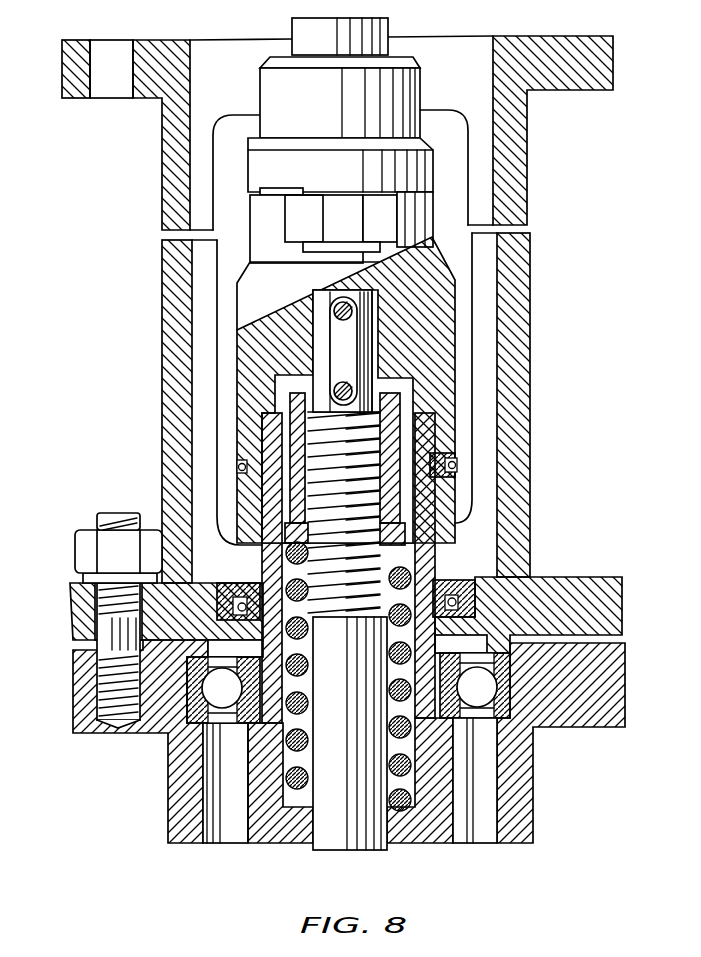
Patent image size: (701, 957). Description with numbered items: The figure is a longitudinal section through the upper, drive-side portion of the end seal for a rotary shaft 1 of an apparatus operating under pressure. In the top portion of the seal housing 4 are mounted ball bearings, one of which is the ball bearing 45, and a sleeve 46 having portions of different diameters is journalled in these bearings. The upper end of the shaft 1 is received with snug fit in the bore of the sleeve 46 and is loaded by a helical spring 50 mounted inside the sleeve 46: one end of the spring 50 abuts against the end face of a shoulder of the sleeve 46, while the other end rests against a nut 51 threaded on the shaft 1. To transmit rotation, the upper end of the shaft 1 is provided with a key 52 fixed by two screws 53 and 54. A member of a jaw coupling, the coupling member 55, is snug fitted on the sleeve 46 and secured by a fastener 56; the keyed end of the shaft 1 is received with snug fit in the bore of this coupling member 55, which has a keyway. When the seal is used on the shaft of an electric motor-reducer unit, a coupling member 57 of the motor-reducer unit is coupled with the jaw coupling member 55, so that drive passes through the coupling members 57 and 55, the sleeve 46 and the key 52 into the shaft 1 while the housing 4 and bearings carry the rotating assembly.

The rotary shaft 1 is at (310, 834).
The housing 4 is at (162, 786).
The ball bearing 45 is at (477, 704).
The sleeve 46 is at (453, 780).
The helical spring 50 is at (412, 578).
The nut 51 is at (402, 441).
The key 52 is at (335, 339).
The screw 53 is at (330, 312).
The screw 54 is at (347, 388).
The jaw coupling member 55 is at (423, 224).
The fastener 56 is at (458, 475).
The coupling member of the motor-reducer unit 57 is at (422, 166).